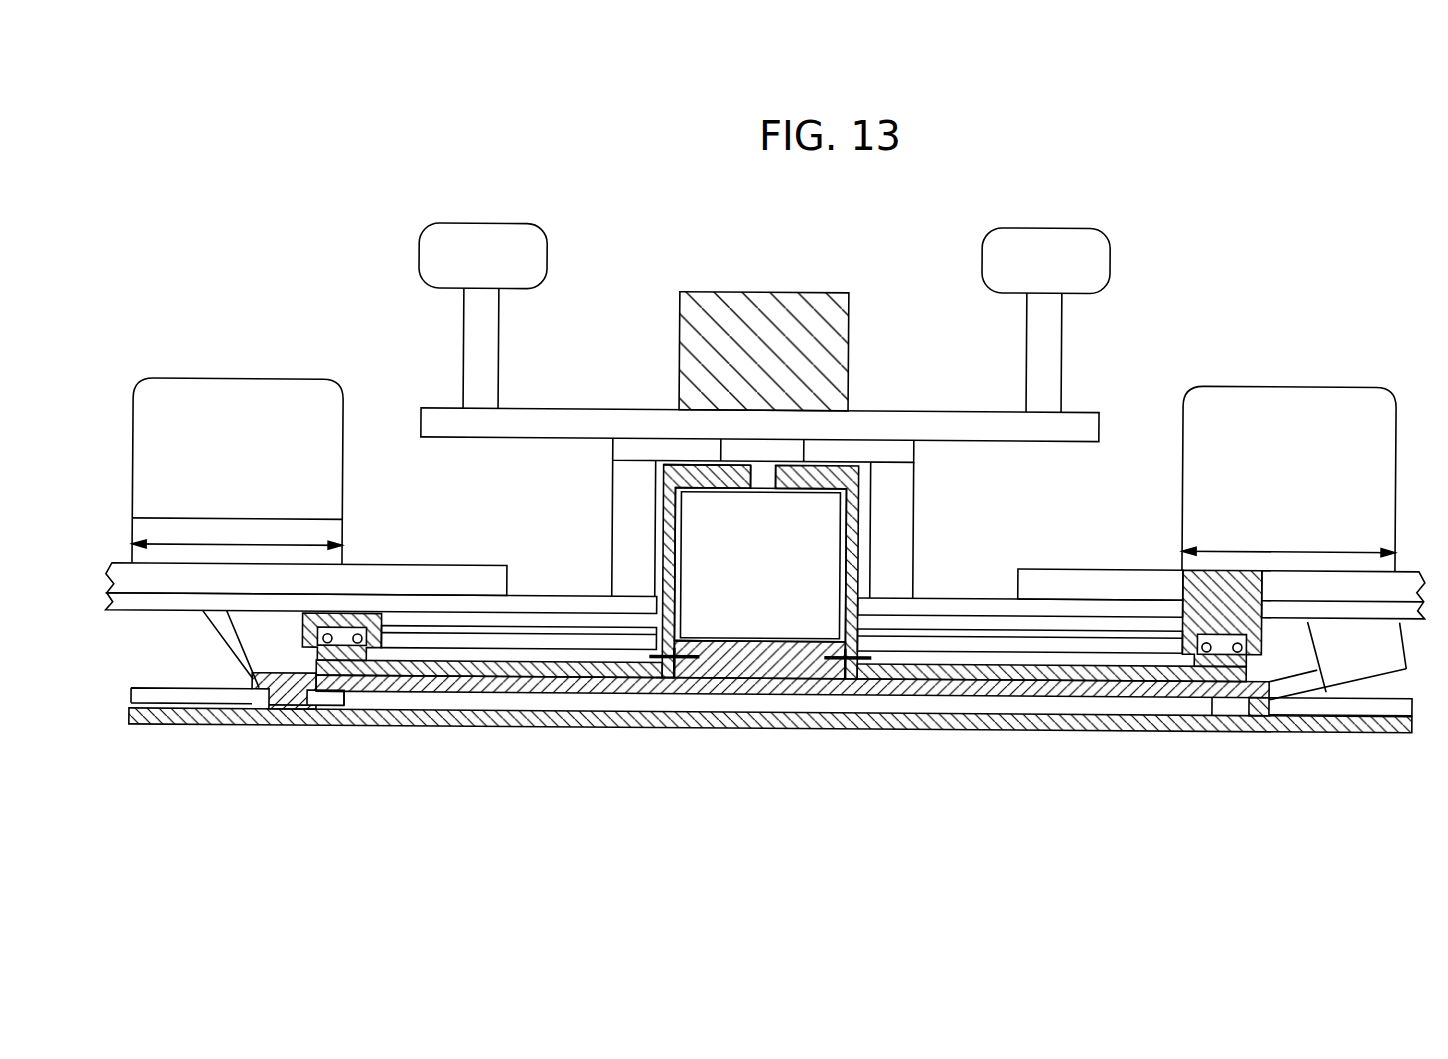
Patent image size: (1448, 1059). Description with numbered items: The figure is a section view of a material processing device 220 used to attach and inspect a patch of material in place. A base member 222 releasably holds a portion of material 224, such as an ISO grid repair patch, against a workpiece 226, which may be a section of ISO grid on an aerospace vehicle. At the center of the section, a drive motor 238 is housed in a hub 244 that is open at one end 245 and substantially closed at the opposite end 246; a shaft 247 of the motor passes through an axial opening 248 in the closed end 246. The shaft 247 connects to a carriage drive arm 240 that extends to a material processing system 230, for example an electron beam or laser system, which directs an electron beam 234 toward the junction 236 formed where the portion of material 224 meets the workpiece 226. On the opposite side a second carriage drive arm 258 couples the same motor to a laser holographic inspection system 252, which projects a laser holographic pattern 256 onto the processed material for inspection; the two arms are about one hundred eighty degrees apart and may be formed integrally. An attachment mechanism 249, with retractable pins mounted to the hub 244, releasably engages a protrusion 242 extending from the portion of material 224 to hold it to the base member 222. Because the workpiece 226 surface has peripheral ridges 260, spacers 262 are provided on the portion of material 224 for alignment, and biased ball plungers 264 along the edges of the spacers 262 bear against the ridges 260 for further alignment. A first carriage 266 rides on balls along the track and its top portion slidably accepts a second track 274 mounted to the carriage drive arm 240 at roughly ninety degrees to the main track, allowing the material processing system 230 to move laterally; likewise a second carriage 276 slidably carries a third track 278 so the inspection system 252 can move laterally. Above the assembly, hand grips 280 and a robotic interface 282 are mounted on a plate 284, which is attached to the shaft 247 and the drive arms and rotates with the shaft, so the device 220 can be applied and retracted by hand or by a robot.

The material processing device 220 is at (1180, 276).
The base member 222 is at (465, 670).
The portion of material 224 is at (550, 686).
The workpiece 226 is at (180, 724).
The material processing system 230 is at (185, 392).
The electron beam 234 is at (232, 641).
The junction 236 is at (253, 679).
The drive motor 238 is at (825, 527).
The carriage drive arm 240 is at (565, 609).
The protrusion 242 is at (743, 663).
The hub 244 is at (848, 566).
The open end 245 is at (698, 669).
The substantially closed end 246 is at (735, 490).
The shaft 247 is at (763, 472).
The axial opening 248 is at (764, 470).
The attachment mechanism 249 is at (700, 621).
The laser holographic inspection system 252 is at (1300, 393).
The laser holographic pattern 256 is at (1292, 690).
The carriage drive arm 258 is at (988, 606).
The ridges 260 is at (262, 712).
The spacers 262 is at (300, 706).
The biased ball plungers 264 is at (276, 705).
The first carriage 266 is at (357, 616).
The second track 274 is at (445, 577).
The second carriage 276 is at (1205, 587).
The third track 278 is at (1073, 576).
The hand grips 280 is at (497, 230).
The robotic interface 282 is at (780, 310).
The plate 284 is at (960, 426).